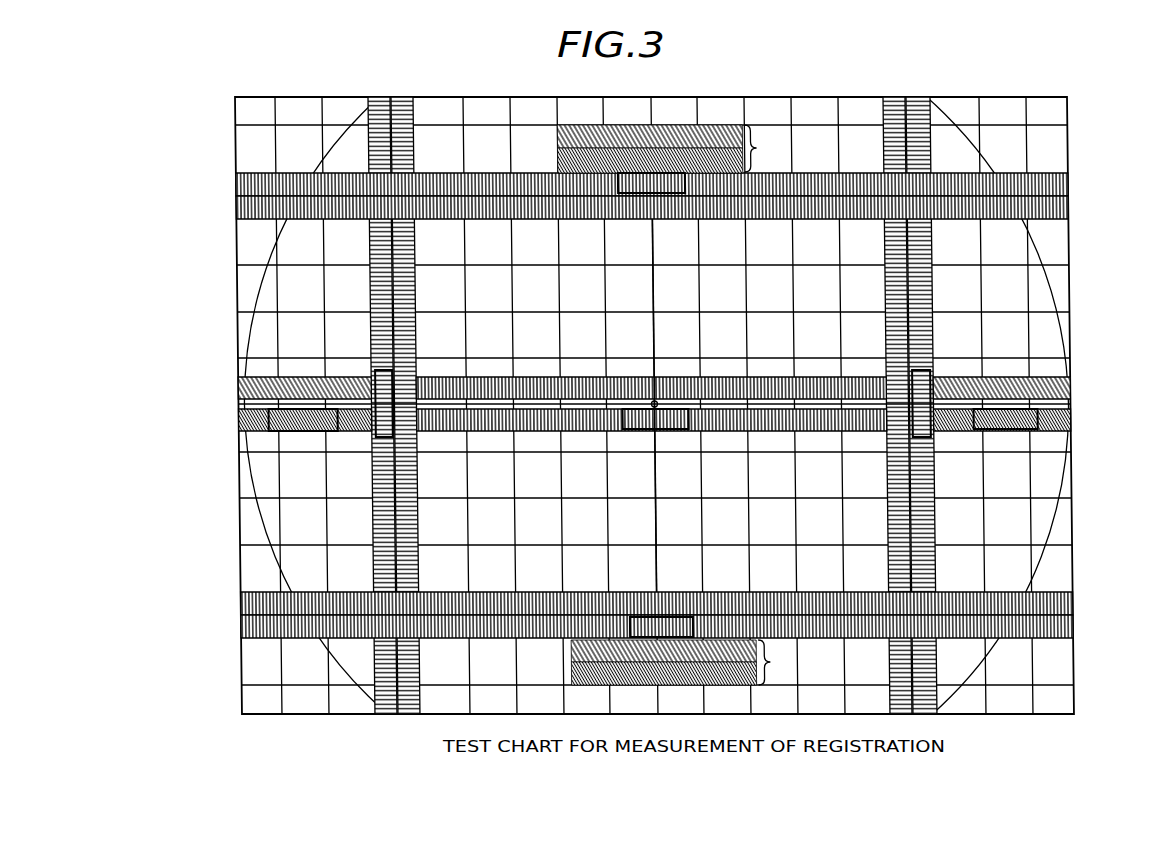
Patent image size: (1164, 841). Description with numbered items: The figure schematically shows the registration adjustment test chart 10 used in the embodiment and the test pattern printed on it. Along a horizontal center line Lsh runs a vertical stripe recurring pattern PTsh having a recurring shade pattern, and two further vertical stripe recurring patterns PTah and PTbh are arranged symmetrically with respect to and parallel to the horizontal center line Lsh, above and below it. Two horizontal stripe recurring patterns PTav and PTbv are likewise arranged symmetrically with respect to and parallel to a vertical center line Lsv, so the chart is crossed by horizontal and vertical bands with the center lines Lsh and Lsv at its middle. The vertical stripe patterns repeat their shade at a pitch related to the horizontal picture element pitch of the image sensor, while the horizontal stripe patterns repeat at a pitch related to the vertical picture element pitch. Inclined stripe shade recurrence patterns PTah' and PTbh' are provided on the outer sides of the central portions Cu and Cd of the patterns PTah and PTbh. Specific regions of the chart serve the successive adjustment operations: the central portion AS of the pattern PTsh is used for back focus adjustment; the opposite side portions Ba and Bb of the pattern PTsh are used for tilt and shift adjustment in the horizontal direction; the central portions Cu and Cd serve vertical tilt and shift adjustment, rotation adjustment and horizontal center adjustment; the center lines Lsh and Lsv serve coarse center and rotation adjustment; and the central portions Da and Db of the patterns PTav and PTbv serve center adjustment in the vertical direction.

The registration adjustment test chart 10 is at (230, 630).
The horizontal stripe recurring pattern PTav is at (413, 96).
The horizontal stripe recurring pattern PTbv is at (930, 96).
The vertical stripe recurring pattern PTah is at (676, 196).
The stripe shade recurrence pattern PTah' is at (675, 122).
The vertical stripe recurring pattern PTsh is at (1071, 377).
The vertical stripe recurring pattern PTbh is at (683, 615).
The stripe shade recurrence pattern PTbh' is at (698, 688).
The vertical center line Lsv is at (657, 297).
The horizontal center line Lsh is at (778, 406).
The central portion Cu is at (631, 192).
The central portion Cd is at (652, 618).
The central portion AS is at (641, 419).
The side portion Ba is at (305, 424).
The side portion Bb is at (1004, 427).
The central portion Da is at (380, 373).
The central portion Db is at (928, 376).